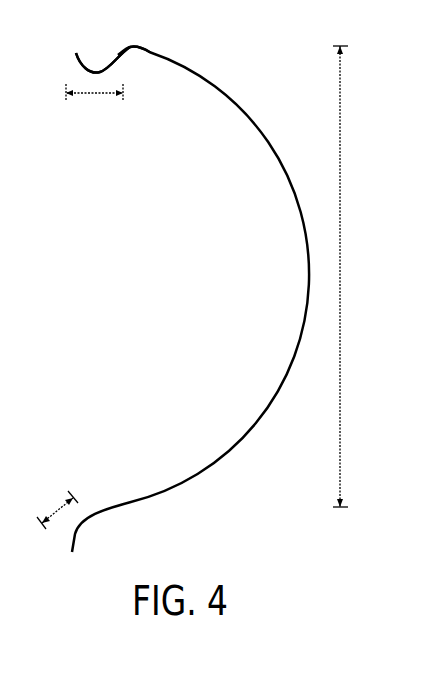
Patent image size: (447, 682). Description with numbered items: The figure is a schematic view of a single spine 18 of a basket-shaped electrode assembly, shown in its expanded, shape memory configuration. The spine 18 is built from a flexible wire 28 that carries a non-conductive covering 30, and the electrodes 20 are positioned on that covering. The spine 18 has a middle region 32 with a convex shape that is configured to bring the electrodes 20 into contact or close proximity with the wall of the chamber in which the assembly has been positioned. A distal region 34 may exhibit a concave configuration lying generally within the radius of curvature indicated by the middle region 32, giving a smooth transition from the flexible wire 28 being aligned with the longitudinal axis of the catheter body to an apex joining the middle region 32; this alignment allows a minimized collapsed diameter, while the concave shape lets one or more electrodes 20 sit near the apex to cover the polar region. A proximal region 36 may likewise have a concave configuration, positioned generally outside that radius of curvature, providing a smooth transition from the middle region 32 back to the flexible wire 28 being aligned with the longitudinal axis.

The spine 18 is at (139, 202).
The electrodes 20 is at (207, 78).
The flexible wire 28 is at (84, 64).
The non-conductive covering 30 is at (147, 52).
The middle region 32 is at (345, 248).
The distal region 34 is at (93, 100).
The proximal region 36 is at (53, 507).